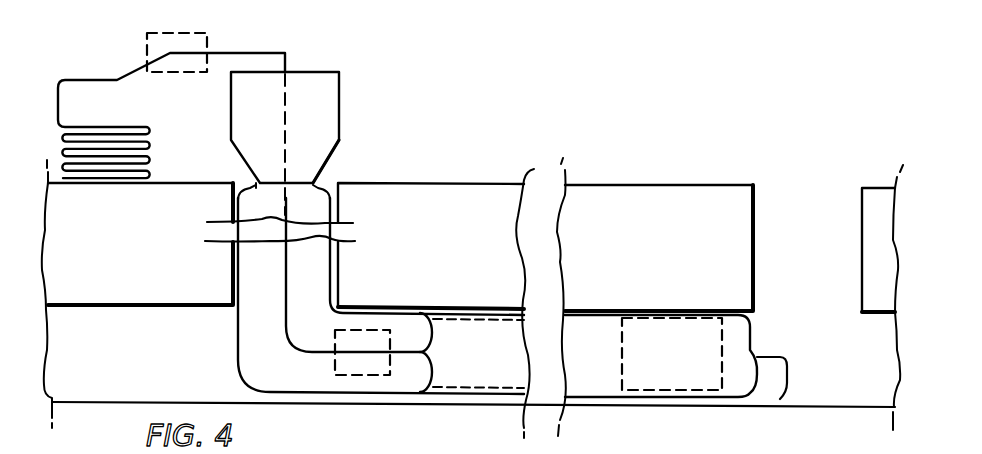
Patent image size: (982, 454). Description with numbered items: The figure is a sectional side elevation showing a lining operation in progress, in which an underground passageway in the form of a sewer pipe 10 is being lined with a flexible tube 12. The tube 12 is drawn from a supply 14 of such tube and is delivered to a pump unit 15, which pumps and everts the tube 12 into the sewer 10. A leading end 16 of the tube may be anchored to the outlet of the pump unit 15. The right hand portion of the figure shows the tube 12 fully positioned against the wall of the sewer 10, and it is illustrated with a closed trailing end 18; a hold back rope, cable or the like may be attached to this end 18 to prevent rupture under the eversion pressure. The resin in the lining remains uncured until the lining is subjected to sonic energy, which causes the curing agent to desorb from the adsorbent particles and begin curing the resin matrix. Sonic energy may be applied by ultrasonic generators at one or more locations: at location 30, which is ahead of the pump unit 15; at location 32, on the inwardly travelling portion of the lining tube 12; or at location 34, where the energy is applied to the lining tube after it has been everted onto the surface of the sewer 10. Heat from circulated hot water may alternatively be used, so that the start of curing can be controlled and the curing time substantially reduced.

The sewer pipe 10 is at (432, 306).
The flexible tube 12 is at (238, 353).
The supply of tube 14 is at (102, 183).
The pump unit 15 is at (339, 118).
The leading end 16 is at (322, 187).
The closed trailing end 18 is at (780, 399).
The sonic energy location 30 is at (207, 36).
The sonic energy location 32 is at (370, 375).
The sonic energy location 34 is at (700, 390).